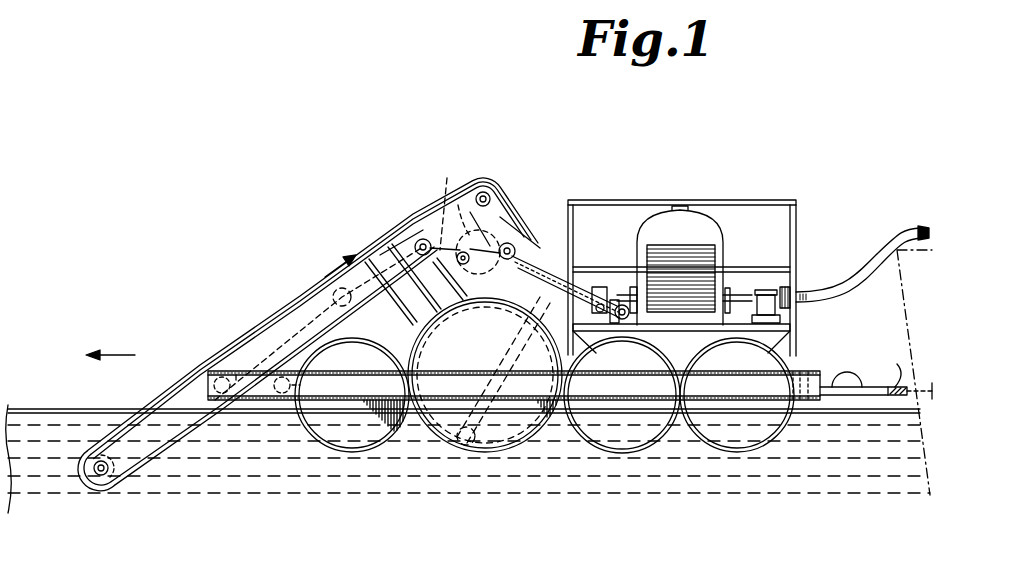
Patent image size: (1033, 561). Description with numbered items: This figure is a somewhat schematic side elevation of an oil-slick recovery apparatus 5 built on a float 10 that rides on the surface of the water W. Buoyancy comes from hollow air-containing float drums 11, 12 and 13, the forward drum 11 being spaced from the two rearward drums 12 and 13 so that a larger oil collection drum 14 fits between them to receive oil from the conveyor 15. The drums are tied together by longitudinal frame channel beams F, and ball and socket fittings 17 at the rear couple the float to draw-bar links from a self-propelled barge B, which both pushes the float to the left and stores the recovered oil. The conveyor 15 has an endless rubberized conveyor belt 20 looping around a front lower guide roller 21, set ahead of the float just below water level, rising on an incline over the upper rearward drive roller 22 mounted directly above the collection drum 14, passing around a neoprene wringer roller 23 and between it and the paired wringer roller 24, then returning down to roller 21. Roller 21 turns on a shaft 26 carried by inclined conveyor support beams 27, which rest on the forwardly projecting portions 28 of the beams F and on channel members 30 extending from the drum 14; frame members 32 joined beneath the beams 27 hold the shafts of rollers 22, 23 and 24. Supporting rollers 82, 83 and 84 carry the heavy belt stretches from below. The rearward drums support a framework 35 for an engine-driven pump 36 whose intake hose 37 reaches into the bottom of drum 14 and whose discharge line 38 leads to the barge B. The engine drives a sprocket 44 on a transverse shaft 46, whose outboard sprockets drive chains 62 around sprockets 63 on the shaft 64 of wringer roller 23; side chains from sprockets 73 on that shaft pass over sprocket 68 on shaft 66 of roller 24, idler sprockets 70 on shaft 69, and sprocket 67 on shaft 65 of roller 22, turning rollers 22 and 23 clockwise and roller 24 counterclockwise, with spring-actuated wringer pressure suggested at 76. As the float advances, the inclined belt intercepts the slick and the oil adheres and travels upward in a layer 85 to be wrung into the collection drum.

The aquatic weed harvesting apparatus 5 is at (128, 406).
The float 10 is at (269, 398).
The forward float drum 11 is at (352, 453).
The rearward float drum 12 is at (620, 454).
The rearward float drum 13 is at (735, 453).
The oil collection drum 14 is at (485, 453).
The conveyor 15 is at (312, 285).
The ball and socket fittings 17 is at (850, 388).
The conveyor belt 20 is at (418, 225).
The front lower guide roller 21 is at (97, 447).
The upper rearward belt drive roller 22 is at (485, 178).
The wringer roller 23 is at (527, 220).
The wringer roller 24 is at (453, 205).
The shaft 26 is at (100, 476).
The conveyor support beams 27 is at (158, 443).
The forwardly-projecting portions of beams F 28 is at (236, 375).
The channel members 30 is at (397, 311).
The frame members 32 is at (472, 300).
The framework 35 is at (707, 205).
The engine-driven pump 36 is at (723, 245).
The intake hose 37 is at (503, 371).
The discharge line 38 is at (744, 293).
The sprocket 44 is at (628, 331).
The transverse shaft 46 is at (616, 305).
The chains 62 is at (574, 246).
The sprockets 63 is at (515, 241).
The shaft 64 is at (472, 276).
The shaft 65 is at (489, 197).
The shaft 66 is at (479, 312).
The sprocket 67 is at (503, 212).
The sprocket 68 is at (440, 279).
The shaft 69 is at (415, 246).
The idler sprockets 70 is at (401, 251).
The sprockets 73 is at (538, 257).
The spring-actuated wringer pressure device 76 is at (455, 250).
The supporting roller 82 is at (177, 410).
The supporting roller 83 is at (327, 321).
The supporting roller 84 is at (514, 385).
The oil layer 85 is at (217, 368).
The water W is at (38, 423).
The frame channel beams F is at (349, 379).
The oil barge B is at (888, 305).